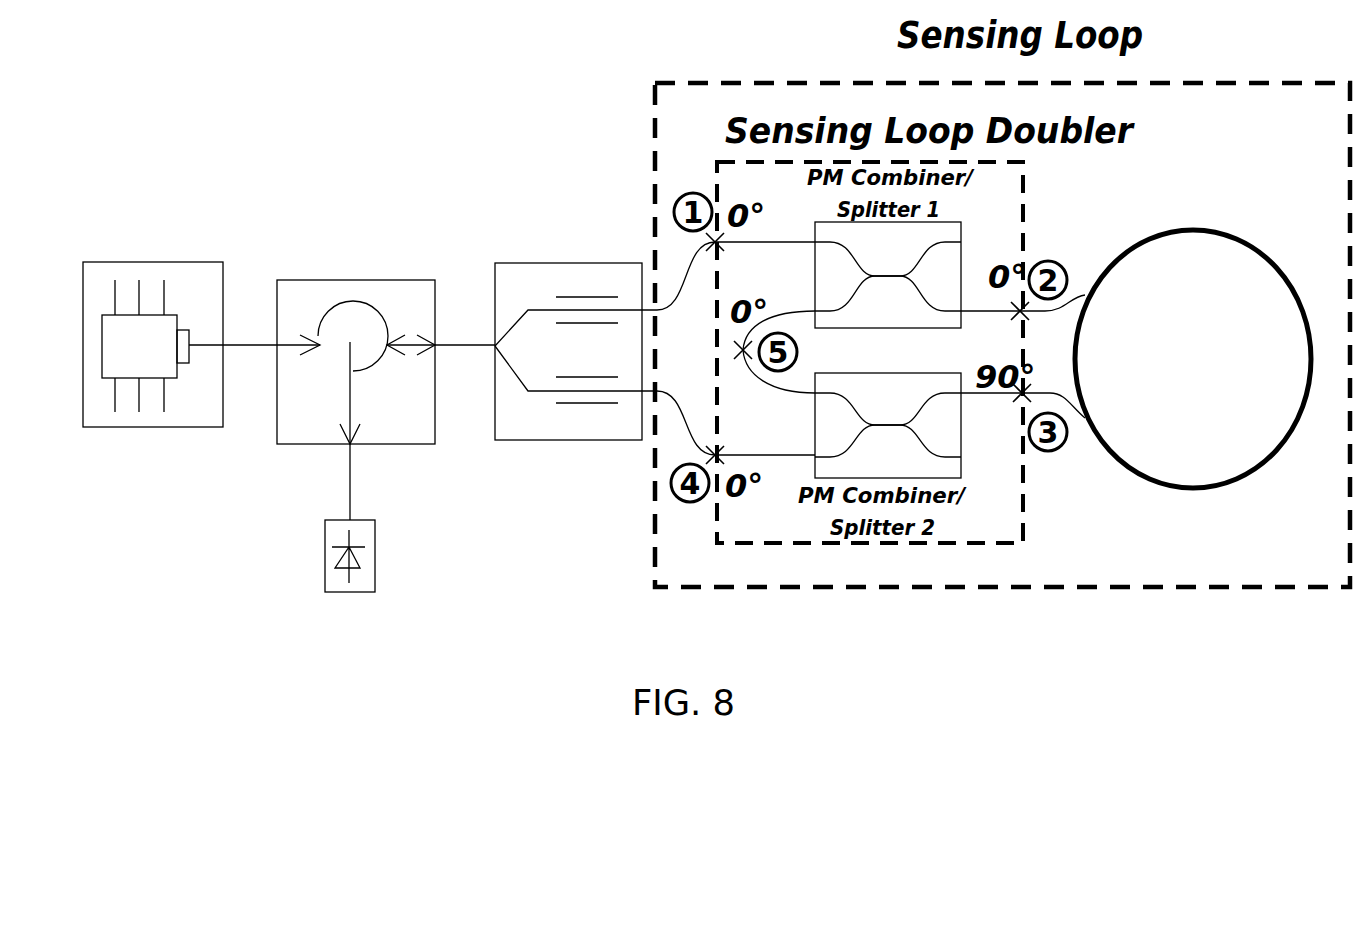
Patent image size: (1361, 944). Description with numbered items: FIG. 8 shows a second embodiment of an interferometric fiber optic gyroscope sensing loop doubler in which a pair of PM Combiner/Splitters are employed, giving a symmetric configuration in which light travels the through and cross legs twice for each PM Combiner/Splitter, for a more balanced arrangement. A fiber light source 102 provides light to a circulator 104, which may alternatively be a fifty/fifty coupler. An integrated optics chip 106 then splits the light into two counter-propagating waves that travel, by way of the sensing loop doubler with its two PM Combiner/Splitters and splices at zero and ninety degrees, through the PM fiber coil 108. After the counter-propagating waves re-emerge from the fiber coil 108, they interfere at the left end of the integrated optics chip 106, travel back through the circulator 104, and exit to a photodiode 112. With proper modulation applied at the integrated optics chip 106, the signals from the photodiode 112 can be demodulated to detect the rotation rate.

The fiber light source (FLS) 102 is at (155, 428).
The circulator 104 is at (383, 445).
The integrated optics chip (IOC) 106 is at (560, 444).
The fiber coil 108 is at (1258, 246).
The photodiode 112 is at (376, 548).